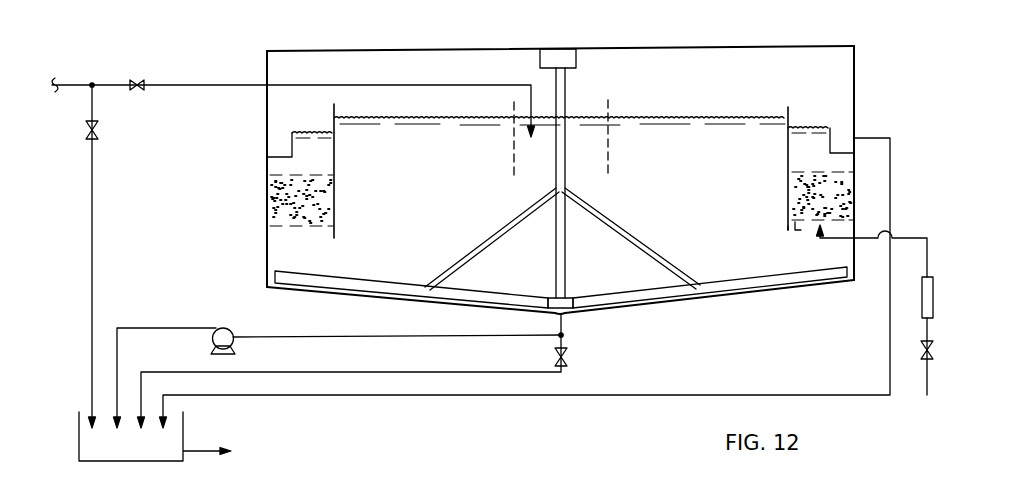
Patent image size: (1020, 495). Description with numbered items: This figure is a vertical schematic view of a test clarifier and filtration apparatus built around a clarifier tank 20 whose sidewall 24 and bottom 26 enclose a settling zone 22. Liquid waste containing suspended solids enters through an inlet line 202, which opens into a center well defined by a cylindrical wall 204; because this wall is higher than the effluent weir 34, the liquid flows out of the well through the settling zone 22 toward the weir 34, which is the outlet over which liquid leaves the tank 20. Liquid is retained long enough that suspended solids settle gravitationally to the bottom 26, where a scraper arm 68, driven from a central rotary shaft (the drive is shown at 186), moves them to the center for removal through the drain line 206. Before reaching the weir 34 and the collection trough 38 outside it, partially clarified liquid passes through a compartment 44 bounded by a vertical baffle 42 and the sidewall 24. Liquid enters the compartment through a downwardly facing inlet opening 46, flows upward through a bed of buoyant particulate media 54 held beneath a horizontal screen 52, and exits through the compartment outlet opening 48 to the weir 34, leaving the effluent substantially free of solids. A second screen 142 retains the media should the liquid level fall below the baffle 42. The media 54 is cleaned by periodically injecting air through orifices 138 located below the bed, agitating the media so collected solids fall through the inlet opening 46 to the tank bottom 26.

The clarifier tank 20 is at (502, 237).
The settling zone 22 is at (603, 275).
The sidewall 24 is at (857, 162).
The bottom 26 is at (797, 290).
The effluent weir 34 is at (830, 128).
The liquid collection trough 38 is at (279, 143).
The vertical baffle 42 is at (786, 130).
The compartment 44 is at (800, 178).
The inlet opening 46 is at (800, 233).
The compartment outlet opening 48 is at (795, 128).
The screen 52 is at (826, 172).
The particulate media 54 is at (800, 199).
The scraper arm 68 is at (735, 277).
The gas injection orifice 138 is at (870, 238).
The screen 142 is at (790, 232).
The drive motor 186 is at (576, 60).
The inlet line 202 is at (338, 82).
The cylindrical wall 204 is at (512, 107).
The drain line 206 is at (563, 325).